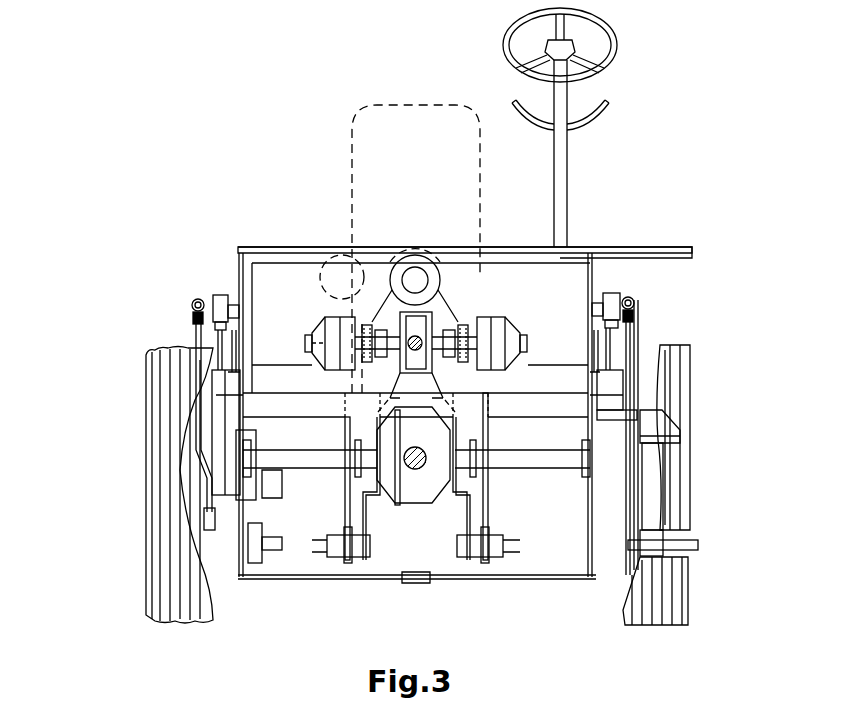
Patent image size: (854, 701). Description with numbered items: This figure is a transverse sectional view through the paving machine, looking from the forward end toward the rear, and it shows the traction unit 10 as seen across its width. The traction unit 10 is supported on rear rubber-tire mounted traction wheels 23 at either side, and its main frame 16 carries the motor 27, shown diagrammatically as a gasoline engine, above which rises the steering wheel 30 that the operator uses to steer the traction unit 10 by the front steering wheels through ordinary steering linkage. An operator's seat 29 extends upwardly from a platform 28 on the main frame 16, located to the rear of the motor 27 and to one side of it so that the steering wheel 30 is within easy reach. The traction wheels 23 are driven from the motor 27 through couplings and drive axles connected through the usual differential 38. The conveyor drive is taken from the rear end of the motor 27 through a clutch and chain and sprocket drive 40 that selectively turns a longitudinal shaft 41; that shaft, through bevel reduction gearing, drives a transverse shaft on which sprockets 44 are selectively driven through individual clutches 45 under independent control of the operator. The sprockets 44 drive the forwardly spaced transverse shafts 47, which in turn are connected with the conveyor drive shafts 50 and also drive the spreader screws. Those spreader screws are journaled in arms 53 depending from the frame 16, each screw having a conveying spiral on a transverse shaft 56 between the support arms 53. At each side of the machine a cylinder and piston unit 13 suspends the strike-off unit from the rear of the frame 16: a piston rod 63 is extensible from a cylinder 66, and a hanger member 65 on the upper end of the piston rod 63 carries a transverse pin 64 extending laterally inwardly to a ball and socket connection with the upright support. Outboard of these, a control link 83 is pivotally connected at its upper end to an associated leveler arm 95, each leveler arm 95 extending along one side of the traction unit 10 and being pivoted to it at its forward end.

The traction unit 10 is at (283, 245).
The cylinder and piston unit 13 is at (234, 372).
The main frame 16 is at (635, 246).
The traction wheel 23 is at (147, 600).
The motor 27 is at (360, 122).
The platform 28 is at (507, 247).
The operator's seat 29 is at (596, 108).
The steering wheel 30 is at (618, 58).
The differential 38 is at (427, 480).
The chain and sprocket drive 40 is at (440, 268).
The longitudinal shaft 41 is at (420, 338).
The sprocket 44 is at (358, 360).
The clutch 45 is at (318, 330).
The transverse shaft 47 is at (330, 458).
The conveyor drive shaft 50 is at (325, 538).
The support arm 53 is at (665, 490).
The transverse shaft 56 is at (630, 548).
The piston rod 63 is at (234, 340).
The transverse pin 64 is at (233, 297).
The hanger member 65 is at (216, 293).
The cylinder 66 is at (220, 418).
The control link 83 is at (195, 337).
The leveler arm 95 is at (193, 298).